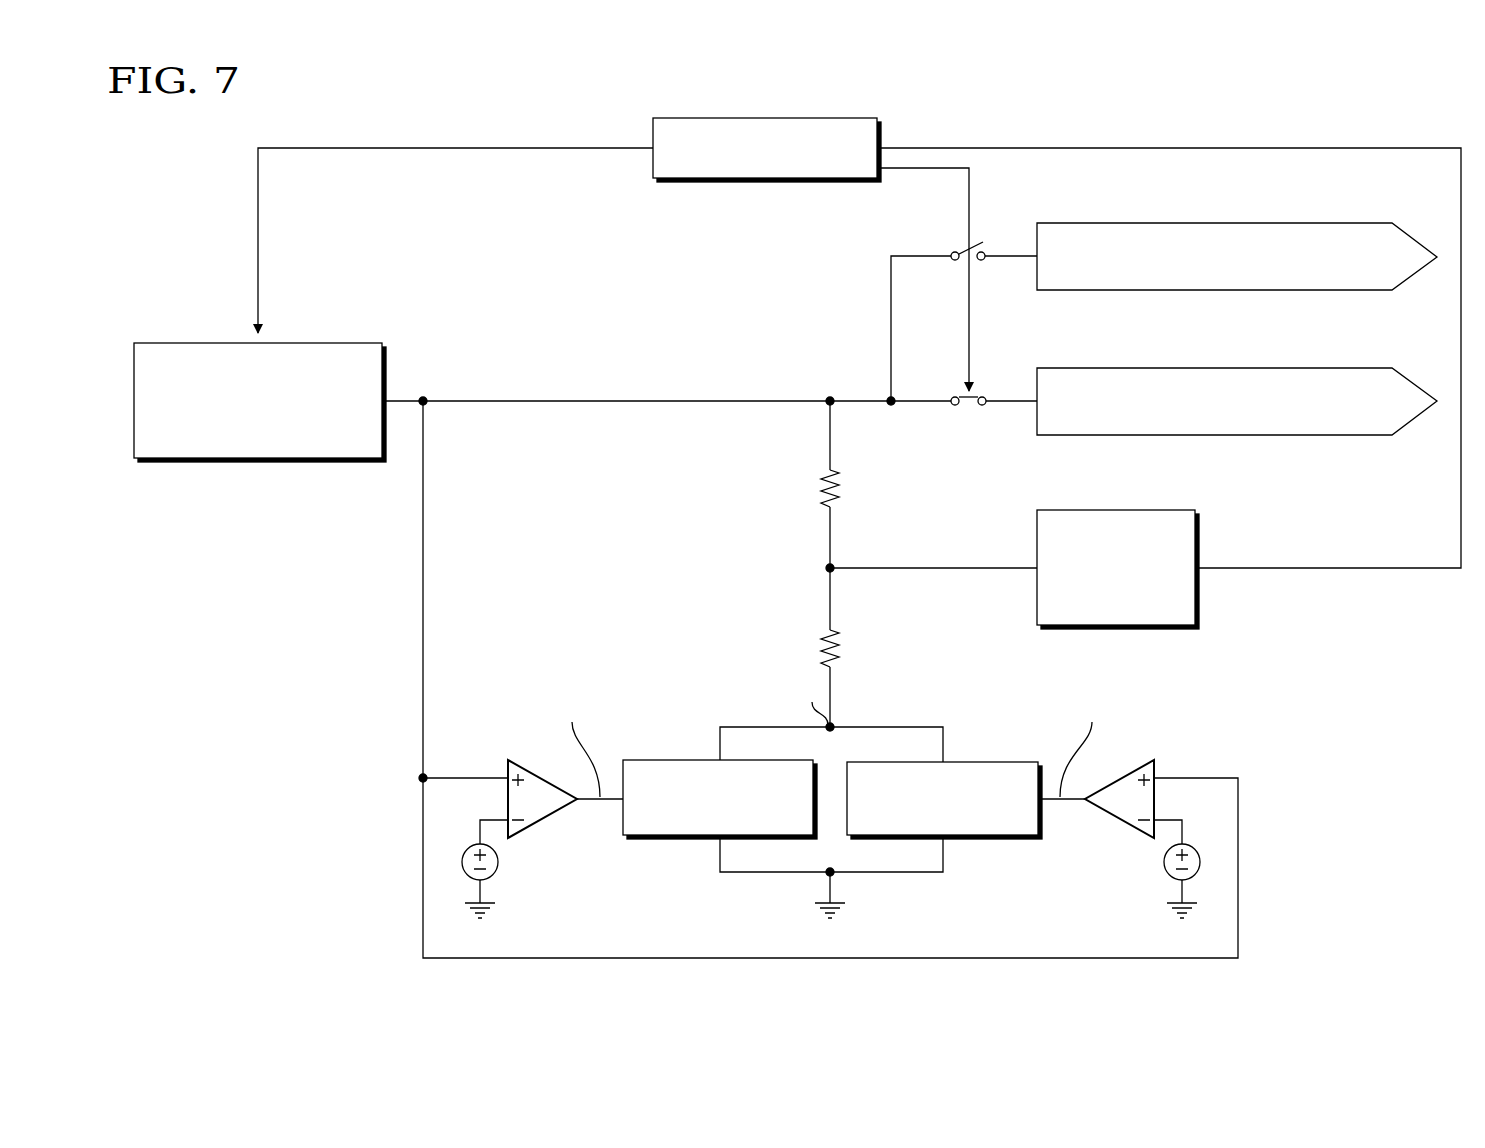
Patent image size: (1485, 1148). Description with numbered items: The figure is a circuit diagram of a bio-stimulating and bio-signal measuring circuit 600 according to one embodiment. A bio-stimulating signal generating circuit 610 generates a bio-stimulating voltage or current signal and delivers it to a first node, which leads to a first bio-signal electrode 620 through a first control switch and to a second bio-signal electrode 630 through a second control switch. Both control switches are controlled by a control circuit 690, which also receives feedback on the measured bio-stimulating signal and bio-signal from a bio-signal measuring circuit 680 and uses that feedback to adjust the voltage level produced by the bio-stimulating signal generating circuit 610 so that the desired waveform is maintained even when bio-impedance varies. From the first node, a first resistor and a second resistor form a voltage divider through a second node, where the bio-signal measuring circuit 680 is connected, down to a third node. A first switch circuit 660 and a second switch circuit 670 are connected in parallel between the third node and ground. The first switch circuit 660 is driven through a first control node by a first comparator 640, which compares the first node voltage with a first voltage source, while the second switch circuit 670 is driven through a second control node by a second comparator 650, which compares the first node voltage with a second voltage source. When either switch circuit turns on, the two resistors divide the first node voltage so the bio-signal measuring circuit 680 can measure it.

The bio-stimulating and bio-signal measuring circuit 600 is at (1362, 66).
The bio-stimulating signal generating circuit 610 is at (333, 343).
The first bio-signal electrode 620 is at (1333, 368).
The second bio-signal electrode 630 is at (1333, 223).
The first comparator 640 is at (540, 775).
The second comparator 650 is at (1122, 775).
The first switch circuit 660 is at (665, 760).
The second switch circuit 670 is at (990, 762).
The bio-signal measuring circuit 680 is at (1145, 510).
The control circuit 690 is at (830, 118).